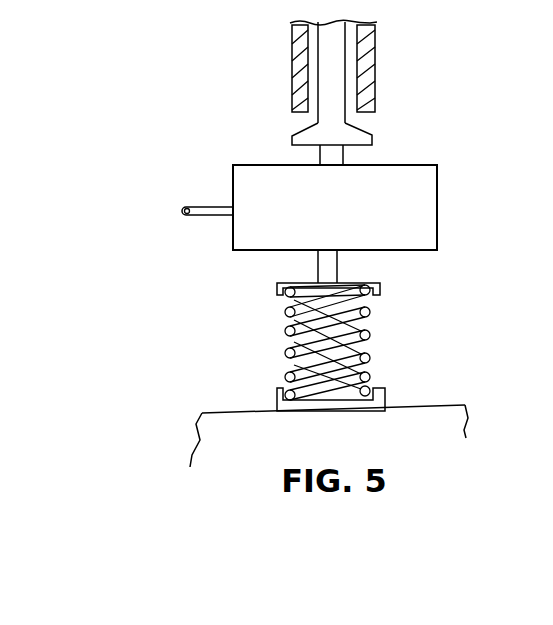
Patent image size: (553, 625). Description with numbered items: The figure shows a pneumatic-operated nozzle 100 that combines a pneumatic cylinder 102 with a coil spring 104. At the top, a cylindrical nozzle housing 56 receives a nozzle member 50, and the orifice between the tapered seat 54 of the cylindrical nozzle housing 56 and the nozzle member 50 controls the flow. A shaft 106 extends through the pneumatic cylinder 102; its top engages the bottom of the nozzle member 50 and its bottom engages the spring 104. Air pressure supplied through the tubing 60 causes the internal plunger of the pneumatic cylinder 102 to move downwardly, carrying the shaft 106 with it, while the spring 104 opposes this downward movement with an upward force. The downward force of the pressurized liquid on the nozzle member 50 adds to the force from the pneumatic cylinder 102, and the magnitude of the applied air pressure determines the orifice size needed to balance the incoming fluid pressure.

The nozzle member 50 is at (374, 138).
The tapered seat 54 is at (306, 114).
The cylindrical nozzle housing 56 is at (384, 58).
The tubing 60 is at (210, 206).
The pneumatic-operated nozzle 100 is at (344, 248).
The pneumatic cylinder 102 is at (438, 206).
The coil spring 104 is at (370, 337).
The shaft 106 is at (340, 266).